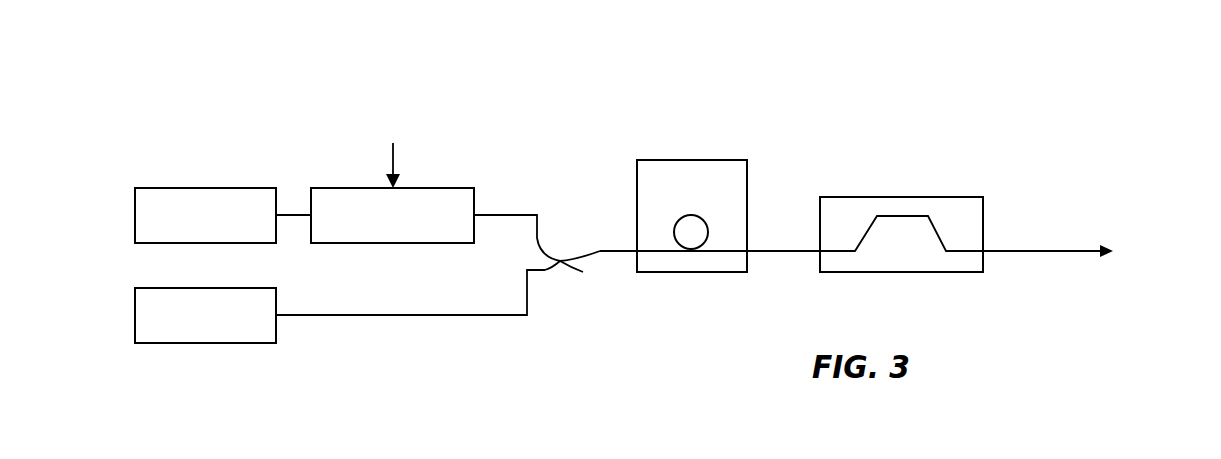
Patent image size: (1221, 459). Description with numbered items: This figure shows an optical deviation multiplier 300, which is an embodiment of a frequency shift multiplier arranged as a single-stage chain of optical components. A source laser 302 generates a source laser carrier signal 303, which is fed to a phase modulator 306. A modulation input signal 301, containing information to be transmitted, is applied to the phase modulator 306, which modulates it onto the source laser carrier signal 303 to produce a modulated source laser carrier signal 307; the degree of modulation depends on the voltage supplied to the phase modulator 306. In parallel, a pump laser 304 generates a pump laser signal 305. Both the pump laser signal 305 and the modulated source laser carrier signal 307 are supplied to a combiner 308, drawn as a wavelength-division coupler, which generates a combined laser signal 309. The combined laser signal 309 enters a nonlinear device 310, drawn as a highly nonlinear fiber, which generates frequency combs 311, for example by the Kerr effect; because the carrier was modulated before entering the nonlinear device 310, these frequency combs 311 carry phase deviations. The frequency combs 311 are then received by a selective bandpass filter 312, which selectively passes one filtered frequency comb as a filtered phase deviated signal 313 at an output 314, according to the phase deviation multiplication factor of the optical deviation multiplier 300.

The optical deviation multiplier 300 is at (170, 87).
The modulation input signal 301 is at (397, 152).
The source laser 302 is at (142, 188).
The source laser carrier signal 303 is at (277, 212).
The pump laser 304 is at (152, 288).
The pump laser signal 305 is at (357, 313).
The phase modulator 306 is at (443, 187).
The modulated source laser carrier signal 307 is at (510, 213).
The combiner 308 is at (563, 258).
The combined laser signal 309 is at (615, 253).
The nonlinear device 310 is at (657, 160).
The frequency combs 311 is at (755, 248).
The selective bandpass filter 312 is at (950, 197).
The filtered phase deviated signal 313 is at (1025, 250).
The output 314 is at (1105, 246).